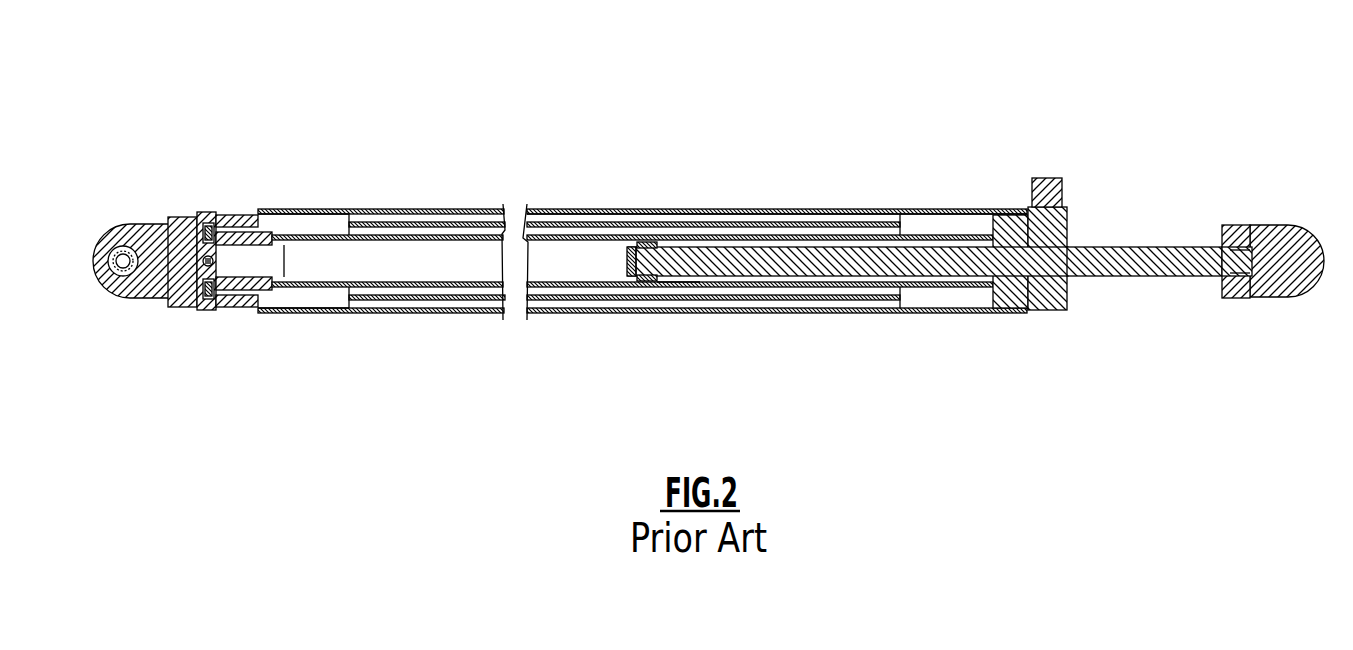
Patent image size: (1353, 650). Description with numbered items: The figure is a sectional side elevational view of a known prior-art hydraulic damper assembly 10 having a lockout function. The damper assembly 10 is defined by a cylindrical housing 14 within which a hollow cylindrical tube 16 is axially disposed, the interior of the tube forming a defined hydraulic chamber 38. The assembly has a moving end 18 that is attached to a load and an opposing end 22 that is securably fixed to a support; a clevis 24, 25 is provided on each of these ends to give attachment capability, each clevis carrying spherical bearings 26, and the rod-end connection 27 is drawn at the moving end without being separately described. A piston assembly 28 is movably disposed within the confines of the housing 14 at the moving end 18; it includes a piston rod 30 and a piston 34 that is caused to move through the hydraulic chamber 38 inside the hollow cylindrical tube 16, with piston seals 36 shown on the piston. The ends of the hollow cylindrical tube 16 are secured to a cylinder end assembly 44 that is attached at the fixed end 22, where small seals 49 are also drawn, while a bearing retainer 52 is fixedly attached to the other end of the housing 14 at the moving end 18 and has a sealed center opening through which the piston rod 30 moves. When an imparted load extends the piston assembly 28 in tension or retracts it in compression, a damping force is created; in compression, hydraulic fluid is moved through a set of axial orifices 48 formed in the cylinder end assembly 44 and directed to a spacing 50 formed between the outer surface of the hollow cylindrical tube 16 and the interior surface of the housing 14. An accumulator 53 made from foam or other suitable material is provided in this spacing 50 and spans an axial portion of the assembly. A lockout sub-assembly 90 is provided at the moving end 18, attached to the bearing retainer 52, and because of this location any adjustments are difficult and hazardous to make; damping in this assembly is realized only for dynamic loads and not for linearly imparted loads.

The hydraulic damper assembly 10 is at (390, 36).
The cylindrical housing 14 is at (738, 211).
The hollow cylindrical tube 16 is at (481, 237).
The moving end 18 is at (1290, 296).
The opposing end 22 is at (184, 308).
The clevis 24 is at (717, 223).
The clevis 25 is at (147, 240).
The spherical bearings 26 is at (106, 236).
The rod end connector 27 is at (1260, 236).
The piston assembly 28 is at (823, 272).
The piston rod 30 is at (1090, 278).
The piston 34 is at (631, 272).
The piston seal 36 is at (650, 277).
The hydraulic chamber 38 is at (418, 268).
The cylinder end assembly 44 is at (234, 213).
The axial orifices 48 is at (245, 227).
The seal 49 is at (211, 213).
The spacing 50 is at (318, 223).
The bearing retainer 52 is at (1018, 290).
The accumulator 53 is at (680, 290).
The lockout sub-assembly 90 is at (1029, 176).